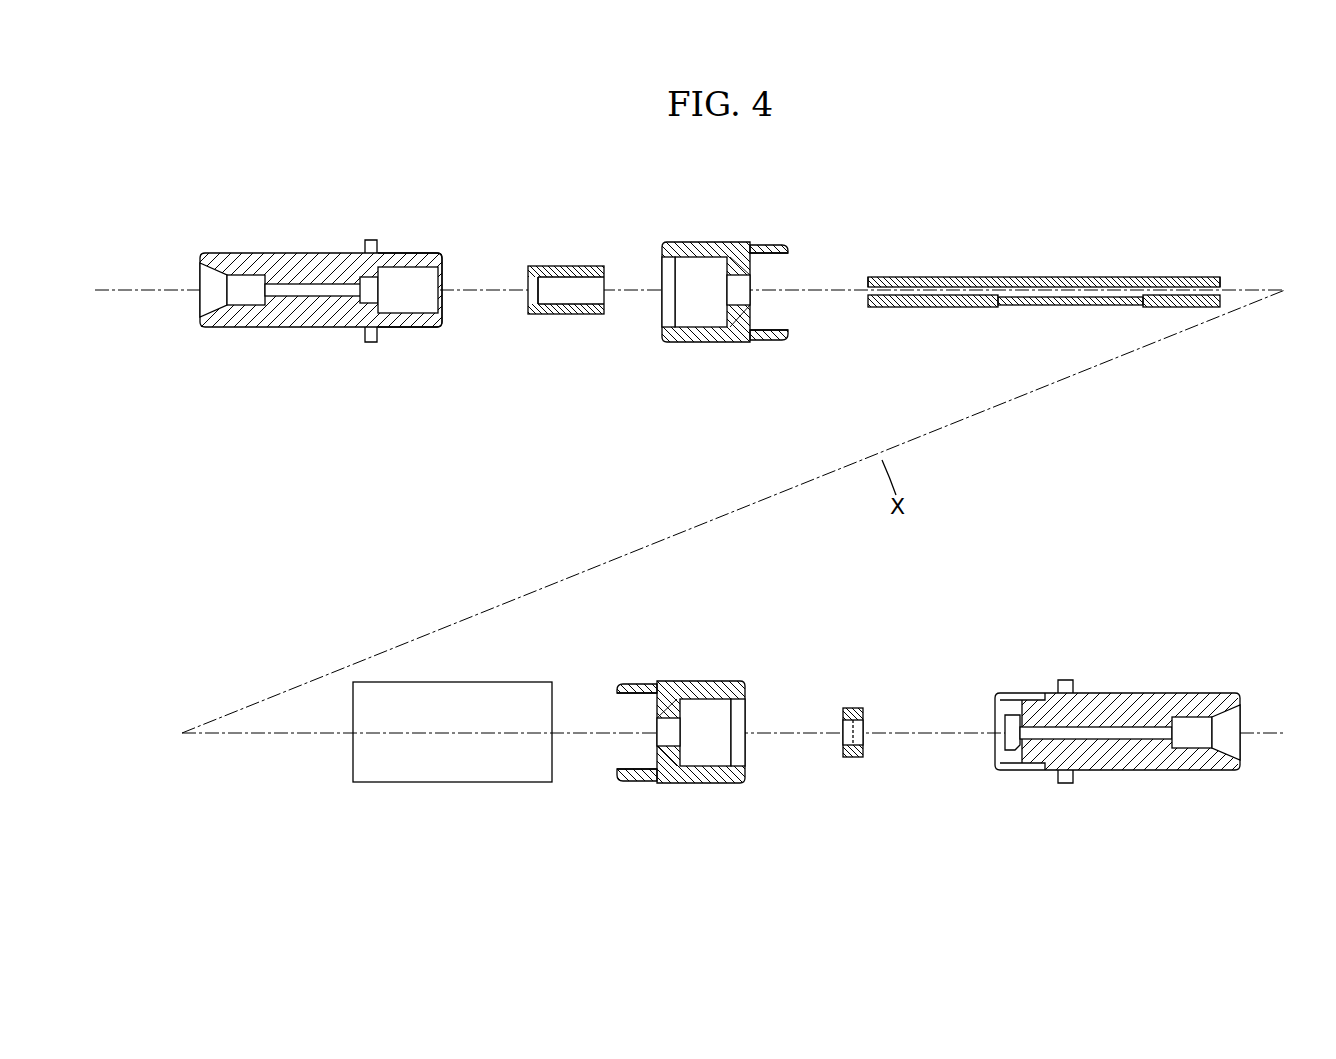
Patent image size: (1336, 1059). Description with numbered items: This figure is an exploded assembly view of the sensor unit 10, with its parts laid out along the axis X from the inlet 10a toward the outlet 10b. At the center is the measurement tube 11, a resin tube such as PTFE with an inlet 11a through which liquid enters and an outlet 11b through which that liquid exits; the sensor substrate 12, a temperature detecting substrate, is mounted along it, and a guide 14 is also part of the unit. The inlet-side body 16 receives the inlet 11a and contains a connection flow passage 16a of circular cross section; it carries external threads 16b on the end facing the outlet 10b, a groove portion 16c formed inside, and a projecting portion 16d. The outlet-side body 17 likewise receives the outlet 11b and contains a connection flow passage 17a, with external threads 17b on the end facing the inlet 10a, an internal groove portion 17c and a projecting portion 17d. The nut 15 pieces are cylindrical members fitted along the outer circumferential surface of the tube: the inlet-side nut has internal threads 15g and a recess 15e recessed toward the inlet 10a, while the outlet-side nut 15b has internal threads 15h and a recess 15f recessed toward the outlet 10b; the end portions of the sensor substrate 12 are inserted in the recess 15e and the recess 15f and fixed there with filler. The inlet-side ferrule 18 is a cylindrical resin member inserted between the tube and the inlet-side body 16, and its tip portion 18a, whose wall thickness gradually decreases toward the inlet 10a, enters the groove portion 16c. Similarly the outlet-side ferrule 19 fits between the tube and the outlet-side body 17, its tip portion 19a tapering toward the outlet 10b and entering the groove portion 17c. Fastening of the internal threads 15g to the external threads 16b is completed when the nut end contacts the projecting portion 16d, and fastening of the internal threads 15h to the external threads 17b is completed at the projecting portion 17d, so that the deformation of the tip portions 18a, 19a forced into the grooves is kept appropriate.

The sensor unit 10 is at (1204, 190).
The inlet 10a is at (205, 283).
The outlet 10b is at (1228, 722).
The measurement tube 11 is at (950, 277).
The inlet 11a is at (866, 276).
The outlet 11b is at (1226, 278).
The sensor substrate 12 is at (1048, 305).
The guide 14 is at (466, 755).
The nut 15 is at (740, 343).
The outlet-side nut 15b is at (661, 783).
The recess 15e is at (800, 335).
The recess 15f is at (610, 768).
The internal threads 15g is at (668, 330).
The internal threads 15h is at (745, 770).
The inlet-side body 16 is at (305, 253).
The connection flow passage 16a is at (310, 327).
The external threads 16b is at (405, 253).
The groove portion 16c is at (392, 322).
The projecting portion 16d is at (371, 240).
The outlet-side body 17 is at (1162, 770).
The connection flow passage 17a is at (1116, 763).
The external threads 17b is at (1018, 693).
The groove portion 17c is at (988, 702).
The projecting portion 17d is at (1068, 680).
The inlet-side ferrule 18 is at (566, 266).
The tip portion 18a is at (524, 306).
The outlet-side ferrule 19 is at (850, 757).
The tip portion 19a is at (888, 764).